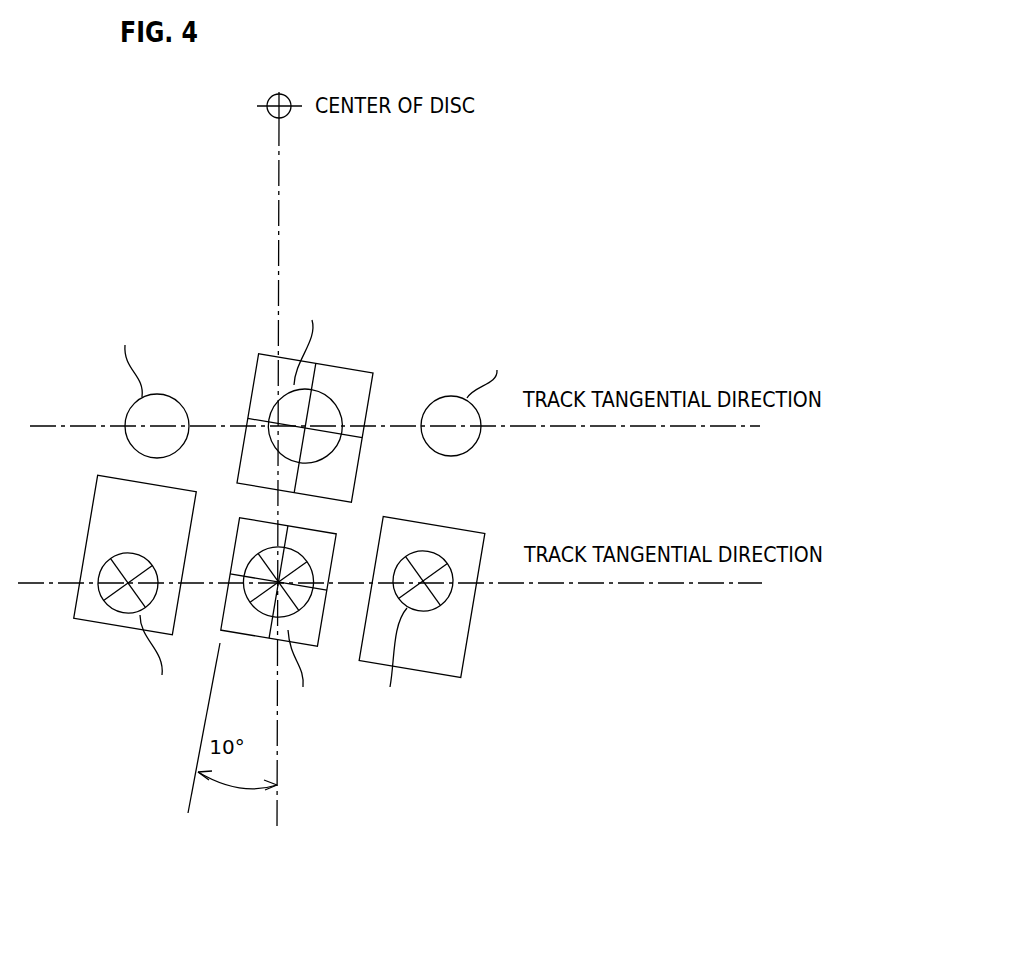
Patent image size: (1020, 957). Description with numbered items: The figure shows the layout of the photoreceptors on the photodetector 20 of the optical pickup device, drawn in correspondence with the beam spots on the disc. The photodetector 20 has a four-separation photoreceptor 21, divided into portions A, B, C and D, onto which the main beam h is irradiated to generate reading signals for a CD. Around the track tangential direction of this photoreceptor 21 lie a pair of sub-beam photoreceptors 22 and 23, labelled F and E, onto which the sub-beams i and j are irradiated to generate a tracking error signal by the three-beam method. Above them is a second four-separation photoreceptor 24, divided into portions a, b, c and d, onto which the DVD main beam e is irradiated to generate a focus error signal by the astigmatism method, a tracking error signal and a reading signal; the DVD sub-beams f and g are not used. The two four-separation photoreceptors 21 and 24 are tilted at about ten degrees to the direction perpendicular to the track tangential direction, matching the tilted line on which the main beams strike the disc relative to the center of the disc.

The photodetector 20 is at (160, 290).
The 4-separation photoreceptor 21 is at (303, 645).
The sub-beam photoreceptor 22 is at (112, 620).
The sub-beam photoreceptor 23 is at (455, 625).
The 4-separation photoreceptor 24 is at (340, 367).